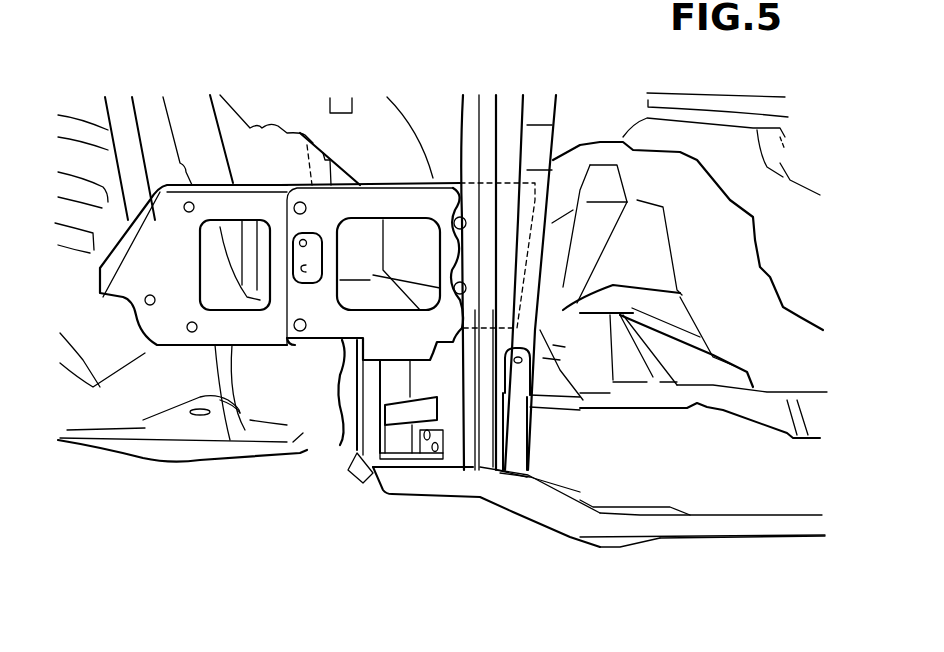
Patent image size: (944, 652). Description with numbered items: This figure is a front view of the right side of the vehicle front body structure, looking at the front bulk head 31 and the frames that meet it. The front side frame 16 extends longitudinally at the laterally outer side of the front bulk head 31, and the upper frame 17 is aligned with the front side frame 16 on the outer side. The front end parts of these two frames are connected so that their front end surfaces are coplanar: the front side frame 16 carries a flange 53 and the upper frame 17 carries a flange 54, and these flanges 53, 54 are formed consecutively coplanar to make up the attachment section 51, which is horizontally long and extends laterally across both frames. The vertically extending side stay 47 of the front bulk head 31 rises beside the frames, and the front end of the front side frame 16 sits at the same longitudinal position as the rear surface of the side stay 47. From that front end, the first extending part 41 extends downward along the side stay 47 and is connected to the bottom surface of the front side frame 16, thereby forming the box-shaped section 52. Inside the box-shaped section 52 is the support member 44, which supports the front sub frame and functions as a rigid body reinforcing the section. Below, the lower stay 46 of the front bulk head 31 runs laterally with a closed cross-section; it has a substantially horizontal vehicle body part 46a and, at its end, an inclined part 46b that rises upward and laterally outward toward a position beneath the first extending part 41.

The upper frame 17 is at (152, 115).
The front side frame 16 is at (287, 152).
The side stay 47 is at (507, 122).
The attachment section 51 is at (283, 374).
The flange 54 is at (221, 338).
The flange 53 is at (325, 327).
The support member 44 is at (397, 438).
The first extending part 41 is at (423, 450).
The box-shaped section 52 is at (440, 472).
The inclined part 46b is at (520, 507).
The vehicle body part 46a is at (643, 528).
The lower stay 46 is at (612, 528).
The front bulk head 31 is at (668, 540).